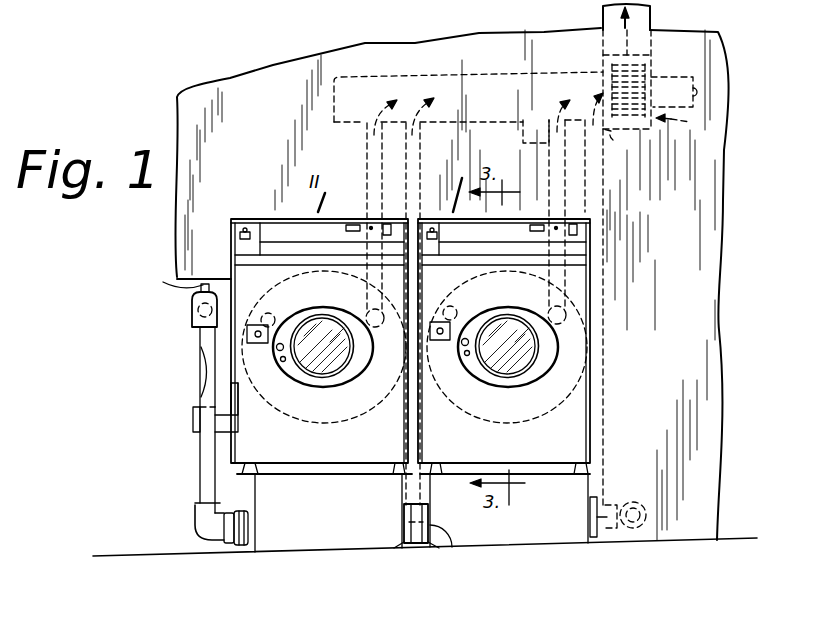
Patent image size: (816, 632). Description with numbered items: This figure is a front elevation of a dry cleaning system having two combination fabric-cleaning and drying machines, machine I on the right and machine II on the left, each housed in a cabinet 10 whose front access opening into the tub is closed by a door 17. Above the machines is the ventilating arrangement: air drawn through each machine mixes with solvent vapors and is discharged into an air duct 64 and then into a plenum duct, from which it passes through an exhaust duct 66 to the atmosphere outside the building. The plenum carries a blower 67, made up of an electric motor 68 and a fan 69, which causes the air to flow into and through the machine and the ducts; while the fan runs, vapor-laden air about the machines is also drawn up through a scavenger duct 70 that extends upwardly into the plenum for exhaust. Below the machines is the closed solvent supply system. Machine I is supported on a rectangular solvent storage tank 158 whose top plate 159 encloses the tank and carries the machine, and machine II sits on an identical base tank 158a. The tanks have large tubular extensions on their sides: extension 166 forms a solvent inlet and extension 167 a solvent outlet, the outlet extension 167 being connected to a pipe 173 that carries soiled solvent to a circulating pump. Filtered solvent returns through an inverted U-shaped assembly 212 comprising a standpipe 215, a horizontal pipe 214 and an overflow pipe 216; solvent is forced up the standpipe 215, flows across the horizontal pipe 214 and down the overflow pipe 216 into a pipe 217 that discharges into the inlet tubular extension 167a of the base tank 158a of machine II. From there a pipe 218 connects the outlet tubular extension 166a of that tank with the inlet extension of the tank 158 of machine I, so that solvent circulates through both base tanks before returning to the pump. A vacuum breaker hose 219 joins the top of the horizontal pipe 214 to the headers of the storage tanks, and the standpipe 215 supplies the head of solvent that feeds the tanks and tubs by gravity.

The cabinet 10 is at (535, 314).
The door 17 is at (528, 386).
The air duct 64 is at (523, 142).
The exhaust duct 66 is at (650, 15).
The blower 67 is at (690, 123).
The electric motor 68 is at (678, 73).
The fan 69 is at (618, 144).
The scavenger duct 70 is at (604, 200).
The solvent storage tank 158 is at (527, 520).
The solvent storage base tank 158a is at (318, 520).
The top plate 159 is at (547, 466).
The tubular extension 166 is at (605, 537).
The tubular extension 166a is at (402, 534).
The tubular extension 167 is at (452, 551).
The inlet tubular extension 167a is at (232, 548).
The pipe 173 is at (638, 502).
The inverted U-shaped assembly 212 is at (184, 327).
The horizontal pipe 214 is at (194, 312).
The standpipe 215 is at (202, 373).
The overflow pipe 216 is at (207, 459).
The pipe 217 is at (197, 518).
The pipe 218 is at (419, 540).
The vacuum breaker hose 219 is at (167, 279).